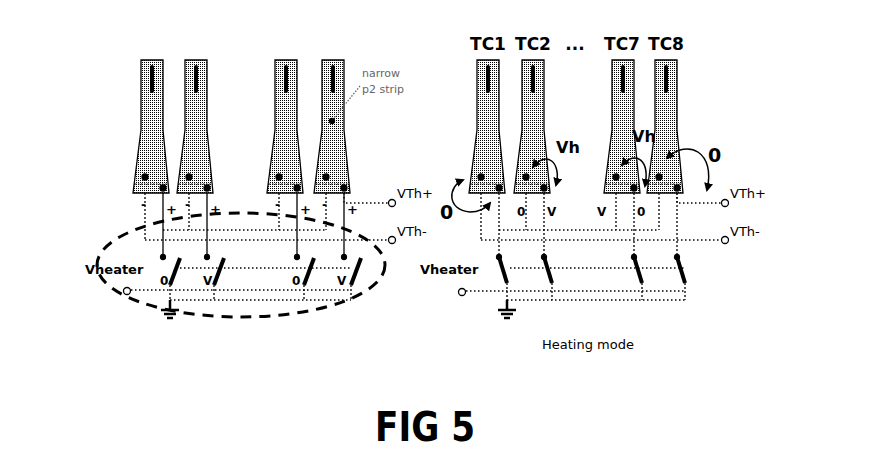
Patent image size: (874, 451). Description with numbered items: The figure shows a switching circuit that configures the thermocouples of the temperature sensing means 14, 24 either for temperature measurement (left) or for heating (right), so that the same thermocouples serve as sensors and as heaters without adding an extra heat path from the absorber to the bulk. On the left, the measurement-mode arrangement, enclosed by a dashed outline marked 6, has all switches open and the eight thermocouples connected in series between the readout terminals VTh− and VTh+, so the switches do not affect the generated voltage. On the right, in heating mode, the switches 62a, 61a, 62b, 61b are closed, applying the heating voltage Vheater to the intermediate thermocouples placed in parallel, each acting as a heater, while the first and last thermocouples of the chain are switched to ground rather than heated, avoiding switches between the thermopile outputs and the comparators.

The temperature sensing means 14 is at (122, 103).
The temperature sensing means 24 is at (242, 113).
The measurement circuit 6 is at (157, 326).
The switch 62a is at (503, 277).
The switch 61a is at (548, 279).
The switch 62b is at (623, 283).
The switch 61b is at (663, 279).